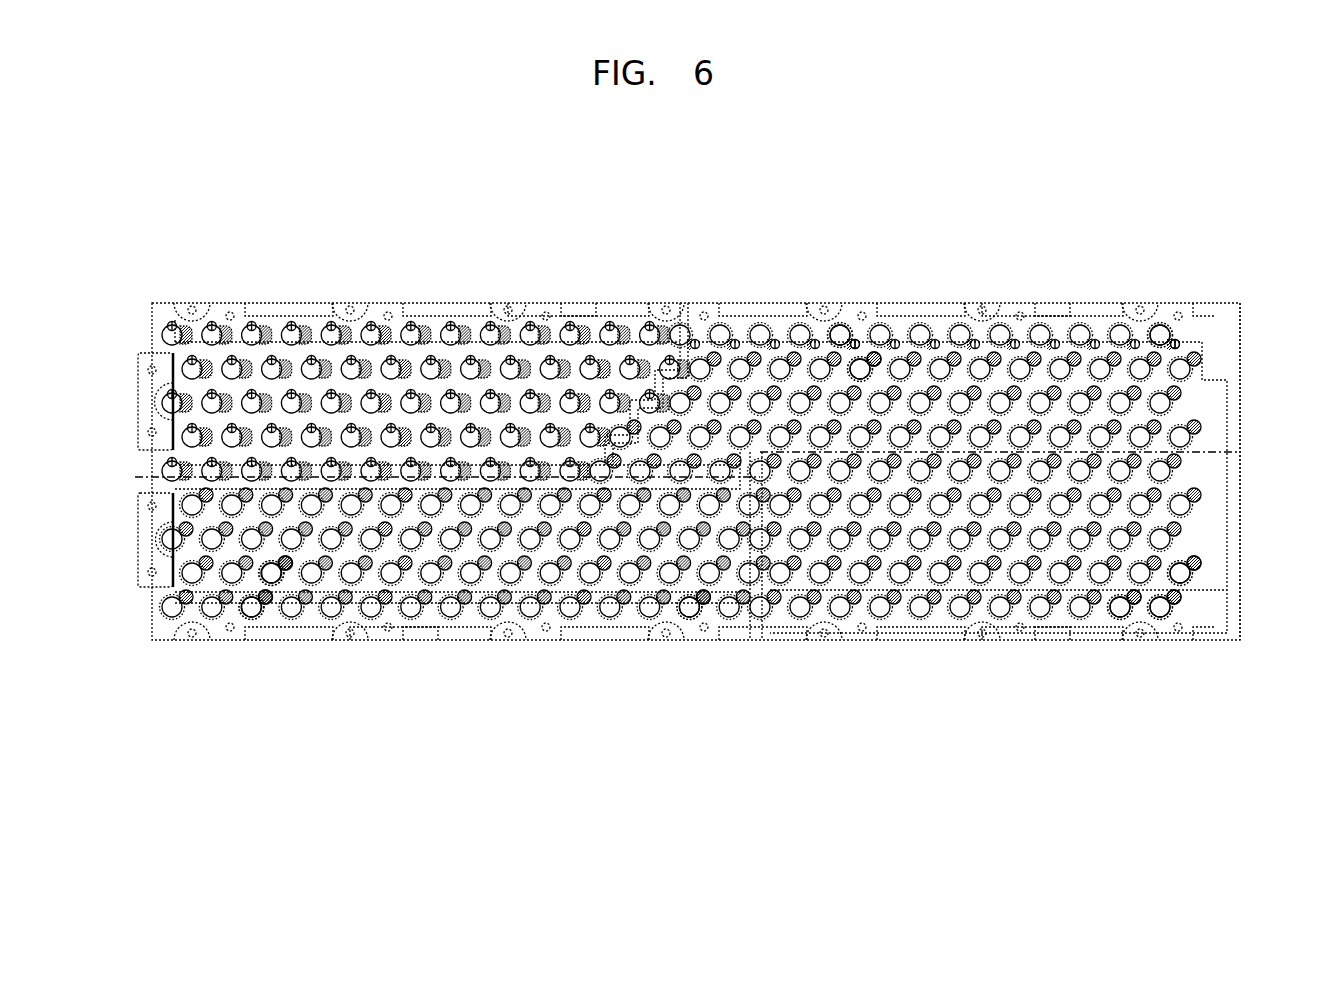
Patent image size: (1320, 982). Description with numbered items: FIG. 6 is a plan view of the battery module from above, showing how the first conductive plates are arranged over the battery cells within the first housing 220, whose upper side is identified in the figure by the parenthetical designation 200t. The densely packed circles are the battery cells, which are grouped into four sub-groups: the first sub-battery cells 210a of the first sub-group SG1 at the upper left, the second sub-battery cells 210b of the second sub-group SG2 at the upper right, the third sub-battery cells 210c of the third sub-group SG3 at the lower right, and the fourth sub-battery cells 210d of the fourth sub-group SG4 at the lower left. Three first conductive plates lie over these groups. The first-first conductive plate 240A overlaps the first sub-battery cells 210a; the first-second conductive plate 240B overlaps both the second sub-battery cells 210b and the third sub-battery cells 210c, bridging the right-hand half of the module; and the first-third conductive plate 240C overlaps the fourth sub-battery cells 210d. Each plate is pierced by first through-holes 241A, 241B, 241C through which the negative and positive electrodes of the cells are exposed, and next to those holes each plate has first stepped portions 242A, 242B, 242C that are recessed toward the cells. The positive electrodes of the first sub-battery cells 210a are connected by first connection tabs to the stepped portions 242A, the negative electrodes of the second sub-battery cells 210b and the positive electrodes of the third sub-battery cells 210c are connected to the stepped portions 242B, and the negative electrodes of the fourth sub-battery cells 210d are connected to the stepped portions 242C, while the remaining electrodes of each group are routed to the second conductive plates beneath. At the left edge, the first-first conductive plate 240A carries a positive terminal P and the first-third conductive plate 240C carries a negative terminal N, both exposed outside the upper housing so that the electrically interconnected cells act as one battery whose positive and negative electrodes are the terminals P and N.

The battery module top side 200t is at (683, 427).
The first housing 220 is at (165, 322).
The first sub-battery cells 210a is at (603, 328).
The second sub-battery cells 210b is at (1159, 328).
The third sub-battery cells 210c is at (1118, 608).
The fourth sub-battery cells 210d is at (688, 612).
The first-first conductive plate 240A is at (418, 355).
The first-second conductive plate 240B is at (1210, 430).
The first-third conductive plate 240C is at (532, 600).
The first through-holes of the first-first conductive plate 241A is at (448, 360).
The first through-holes of the first-second conductive plate 241B is at (1215, 484).
The first through-holes of the first-third conductive plate 241C is at (567, 580).
The first stepped portions of the first-first conductive plate 242A is at (316, 355).
The first stepped portions of the first-second conductive plate 242B is at (1205, 346).
The first stepped portions of the first-third conductive plate 242C is at (453, 605).
The positive terminal P is at (147, 400).
The negative terminal N is at (147, 540).
The first sub-group SG1 is at (545, 300).
The second sub-group SG2 is at (1035, 300).
The third sub-group SG3 is at (1050, 644).
The fourth sub-group SG4 is at (392, 646).